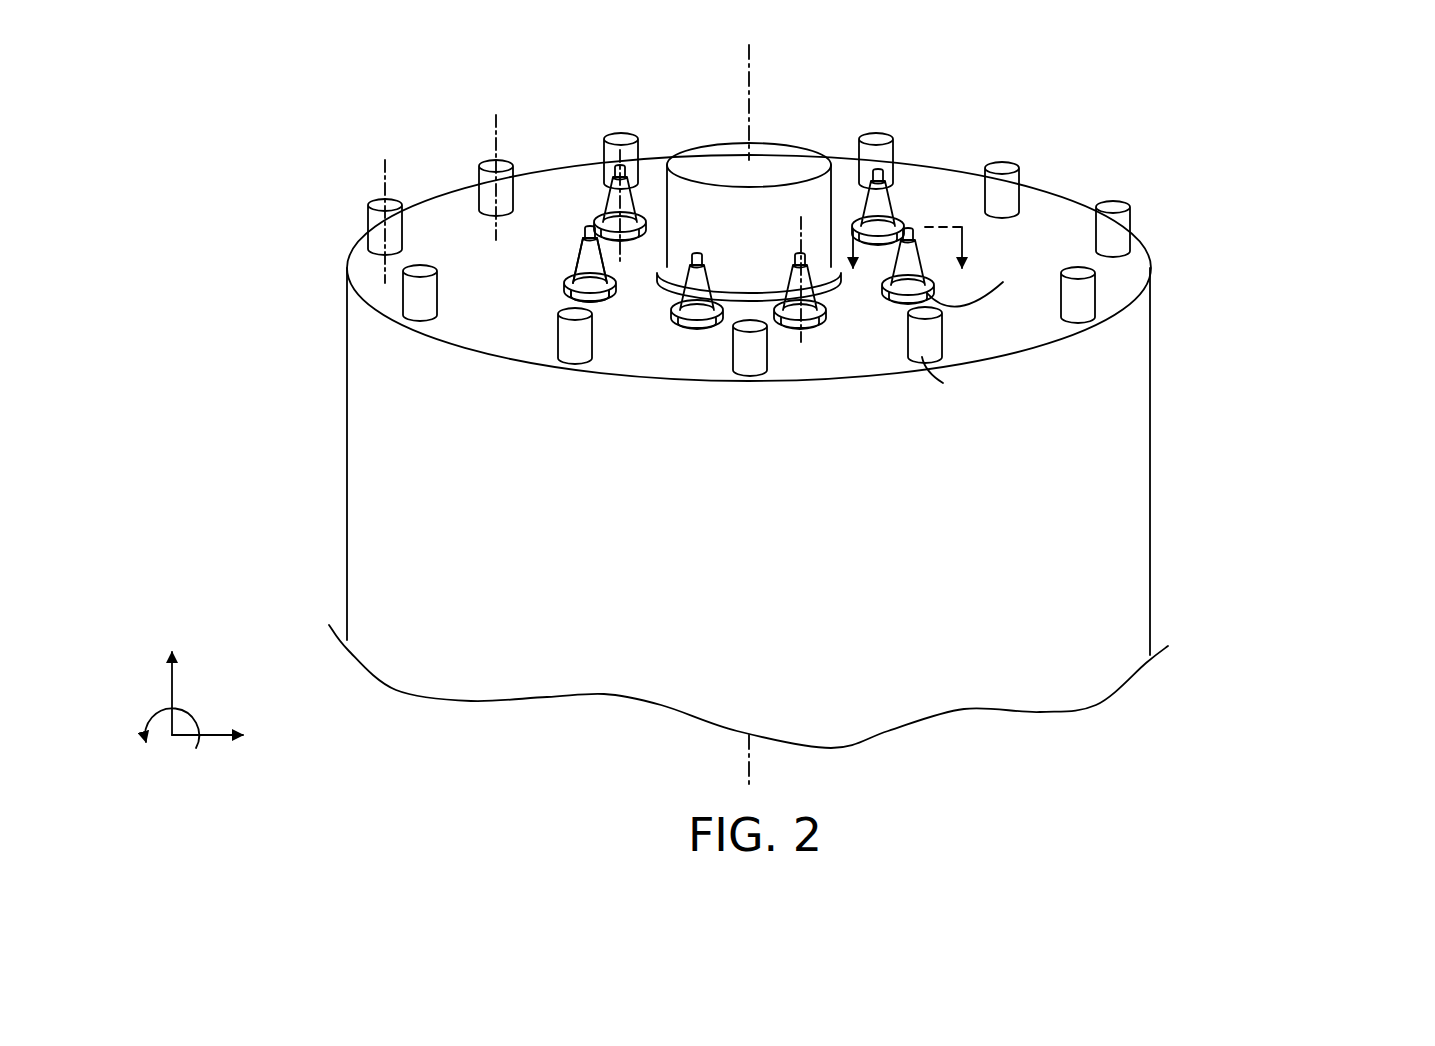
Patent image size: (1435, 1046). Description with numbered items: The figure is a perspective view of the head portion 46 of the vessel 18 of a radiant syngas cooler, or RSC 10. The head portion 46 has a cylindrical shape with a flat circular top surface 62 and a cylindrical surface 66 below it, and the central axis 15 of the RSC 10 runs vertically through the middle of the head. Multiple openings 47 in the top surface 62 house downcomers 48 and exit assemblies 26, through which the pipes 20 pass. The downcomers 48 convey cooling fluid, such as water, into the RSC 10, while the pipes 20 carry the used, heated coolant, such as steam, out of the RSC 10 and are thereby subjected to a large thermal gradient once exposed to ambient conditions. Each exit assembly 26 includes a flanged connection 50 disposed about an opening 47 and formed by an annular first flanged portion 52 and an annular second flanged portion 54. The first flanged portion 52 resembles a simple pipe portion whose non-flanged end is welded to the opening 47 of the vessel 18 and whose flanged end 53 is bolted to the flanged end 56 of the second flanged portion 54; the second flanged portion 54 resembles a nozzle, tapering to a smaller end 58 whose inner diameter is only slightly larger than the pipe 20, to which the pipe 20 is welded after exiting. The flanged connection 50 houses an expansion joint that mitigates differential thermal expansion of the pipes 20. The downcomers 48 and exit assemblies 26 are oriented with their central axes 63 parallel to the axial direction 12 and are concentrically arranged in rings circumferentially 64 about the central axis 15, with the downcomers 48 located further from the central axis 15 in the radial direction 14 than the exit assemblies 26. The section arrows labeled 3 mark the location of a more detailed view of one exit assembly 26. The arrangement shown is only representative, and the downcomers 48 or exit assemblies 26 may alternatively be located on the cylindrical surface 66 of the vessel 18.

The RSC 10 is at (316, 146).
The axial direction 12 is at (172, 683).
The radial direction 14 is at (207, 745).
The central axis 15 is at (755, 104).
The vessel 18 is at (1117, 535).
The pipes 20 is at (886, 178).
The exit assembly 26 is at (711, 340).
The head portion 46 is at (1367, 630).
The openings 47 is at (1072, 327).
The downcomers 48 is at (1011, 185).
The flanged connection 50 is at (572, 283).
The first flanged portion 52 is at (694, 323).
The flanged end 53 is at (614, 310).
The second flanged portion 54 is at (671, 305).
The flanged end 56 is at (562, 266).
The smaller end 58 is at (603, 244).
The top surface 62 is at (506, 307).
The central axes 63 is at (385, 170).
The circumferential direction 64 is at (186, 717).
The cylindrical surface 66 is at (1059, 657).
The section line FIG. 3 is at (910, 267).